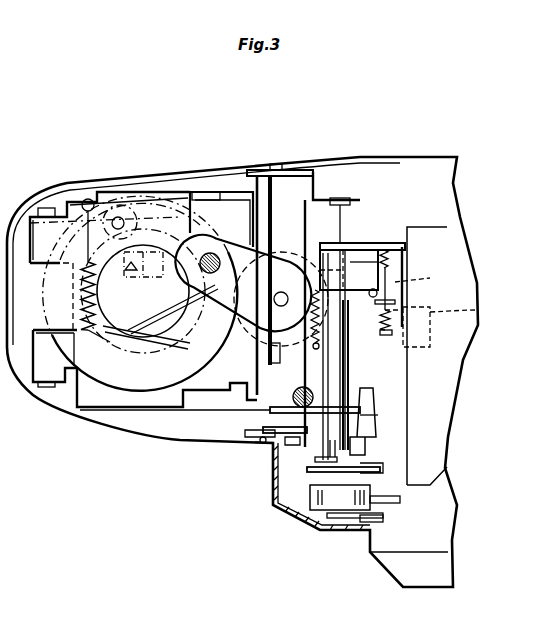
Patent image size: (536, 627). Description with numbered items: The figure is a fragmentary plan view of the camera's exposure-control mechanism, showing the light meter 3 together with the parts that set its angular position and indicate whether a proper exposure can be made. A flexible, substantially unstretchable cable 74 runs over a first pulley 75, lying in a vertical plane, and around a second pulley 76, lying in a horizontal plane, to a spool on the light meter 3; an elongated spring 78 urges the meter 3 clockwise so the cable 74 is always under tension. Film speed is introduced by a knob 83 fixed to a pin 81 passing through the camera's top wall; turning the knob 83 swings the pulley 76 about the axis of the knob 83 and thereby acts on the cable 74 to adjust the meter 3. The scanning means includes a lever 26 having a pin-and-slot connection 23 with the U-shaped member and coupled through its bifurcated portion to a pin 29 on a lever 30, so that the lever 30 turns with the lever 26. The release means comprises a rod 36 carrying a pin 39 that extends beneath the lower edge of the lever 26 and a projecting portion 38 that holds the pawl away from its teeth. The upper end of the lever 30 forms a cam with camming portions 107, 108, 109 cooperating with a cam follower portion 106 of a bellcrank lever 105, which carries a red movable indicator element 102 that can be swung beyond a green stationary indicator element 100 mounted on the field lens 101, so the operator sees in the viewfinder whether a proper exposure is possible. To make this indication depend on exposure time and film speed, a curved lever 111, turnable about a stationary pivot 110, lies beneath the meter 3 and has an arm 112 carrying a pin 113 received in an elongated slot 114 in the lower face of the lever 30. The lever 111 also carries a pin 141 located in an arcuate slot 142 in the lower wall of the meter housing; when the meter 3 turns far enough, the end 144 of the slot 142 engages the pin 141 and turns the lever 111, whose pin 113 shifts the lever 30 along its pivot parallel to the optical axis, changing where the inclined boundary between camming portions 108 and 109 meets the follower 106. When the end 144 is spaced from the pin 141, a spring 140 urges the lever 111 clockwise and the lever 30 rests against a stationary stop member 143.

The light meter 3 is at (70, 250).
The pin-and-slot connection 23 is at (263, 442).
The lever 26 is at (255, 432).
The pin 29 is at (343, 397).
The lever 30 is at (372, 288).
The rod 36 is at (287, 450).
The projecting portion 38 is at (280, 442).
The pin 39 is at (330, 447).
The cable 74 is at (301, 388).
The first pulley 75 is at (280, 443).
The second pulley 76 is at (293, 247).
The spring 78 is at (93, 316).
The pin 81 is at (210, 255).
The knob 83 is at (228, 192).
The stationary indicator element 100 is at (470, 311).
The field lens 101 is at (447, 227).
The movable indicator element 102 is at (423, 347).
The lever 105 is at (402, 322).
The cam follower portion 106 is at (345, 252).
The camming portion 107 is at (346, 332).
The camming portion 108 is at (352, 262).
The camming portion 109 is at (372, 255).
The stationary pivot 110 is at (118, 215).
The lever 111 is at (146, 250).
The arm 112 is at (312, 248).
The pin 113 is at (350, 327).
The elongated slot 114 is at (420, 280).
The spring 140 is at (281, 312).
The pin 141 is at (203, 353).
The arcuate slot 142 is at (196, 394).
The stop member 143 is at (378, 318).
The end of slot 144 is at (155, 365).